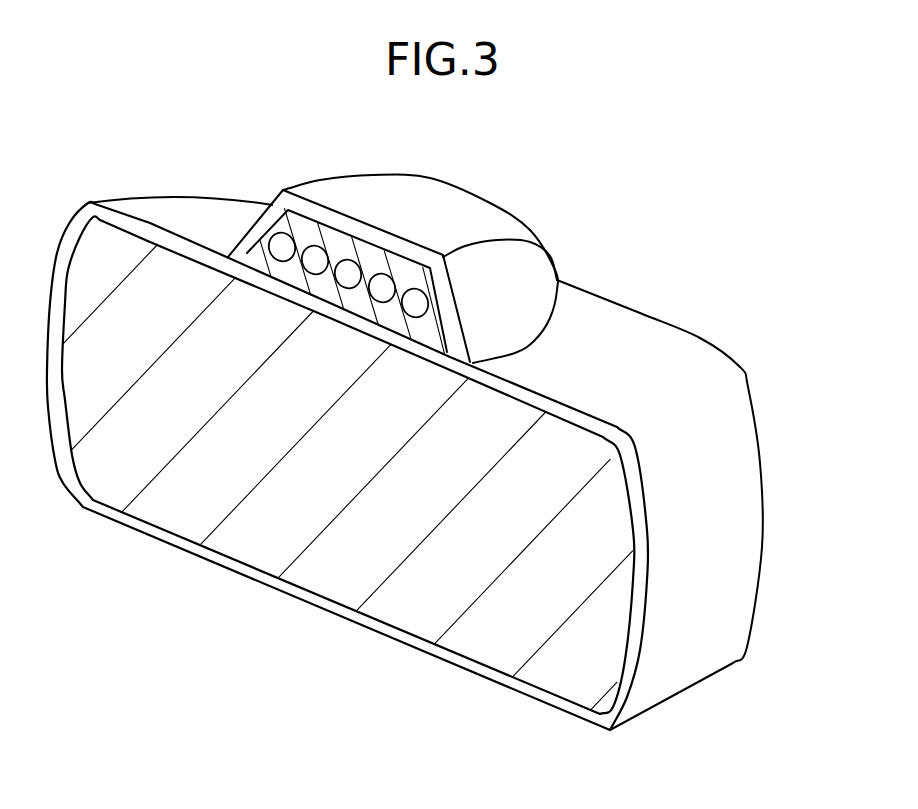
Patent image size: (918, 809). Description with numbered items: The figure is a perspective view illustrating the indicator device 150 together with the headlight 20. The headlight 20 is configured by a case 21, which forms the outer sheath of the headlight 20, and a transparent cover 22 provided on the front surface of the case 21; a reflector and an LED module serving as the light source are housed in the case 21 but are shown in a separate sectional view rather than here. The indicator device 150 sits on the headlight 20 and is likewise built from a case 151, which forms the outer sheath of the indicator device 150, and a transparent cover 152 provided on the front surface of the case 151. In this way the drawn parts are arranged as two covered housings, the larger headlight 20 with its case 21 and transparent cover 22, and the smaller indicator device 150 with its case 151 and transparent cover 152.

The headlight 20 is at (768, 353).
The case 21 is at (747, 573).
The transparent cover 22 is at (470, 640).
The indicator device 150 is at (419, 232).
The case 151 is at (532, 263).
The transparent cover 152 is at (298, 236).